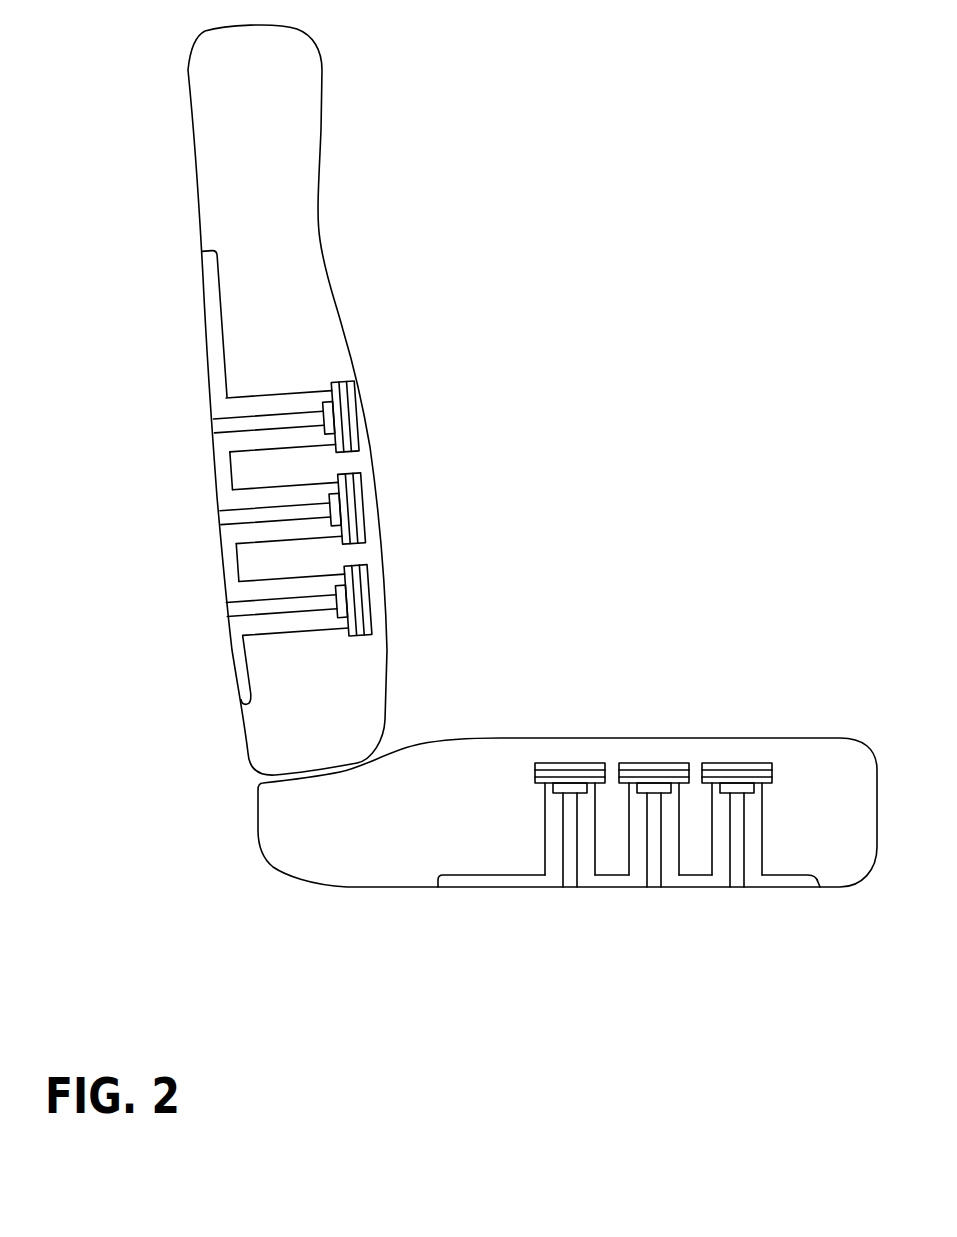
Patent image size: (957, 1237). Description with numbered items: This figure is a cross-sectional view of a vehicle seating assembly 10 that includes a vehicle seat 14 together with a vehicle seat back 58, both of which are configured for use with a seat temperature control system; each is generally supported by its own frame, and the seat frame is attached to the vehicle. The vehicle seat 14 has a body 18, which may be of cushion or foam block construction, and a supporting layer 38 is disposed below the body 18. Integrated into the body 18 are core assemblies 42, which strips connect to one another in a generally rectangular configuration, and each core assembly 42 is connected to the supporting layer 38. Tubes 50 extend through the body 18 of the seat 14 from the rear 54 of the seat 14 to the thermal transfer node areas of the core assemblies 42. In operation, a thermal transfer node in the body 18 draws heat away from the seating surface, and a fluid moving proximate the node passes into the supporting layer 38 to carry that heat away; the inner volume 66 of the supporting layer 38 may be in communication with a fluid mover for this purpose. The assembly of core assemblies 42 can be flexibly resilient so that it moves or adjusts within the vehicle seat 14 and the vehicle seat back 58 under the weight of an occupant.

The vehicle seating assembly 10 is at (489, 509).
The vehicle seat 14 is at (793, 735).
The body 18 is at (418, 745).
The supporting layer 38 is at (283, 636).
The core assemblies 42 is at (541, 760).
The tubes 50 is at (578, 828).
The rear 54 is at (687, 887).
The vehicle seat back 58 is at (321, 217).
The inner volume 66 is at (232, 567).